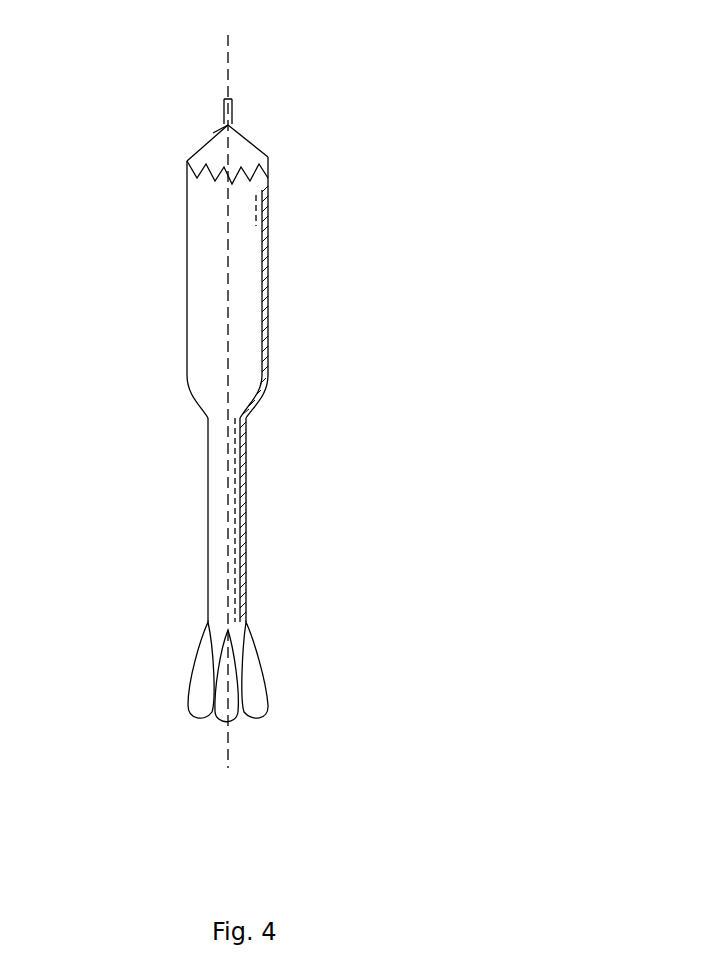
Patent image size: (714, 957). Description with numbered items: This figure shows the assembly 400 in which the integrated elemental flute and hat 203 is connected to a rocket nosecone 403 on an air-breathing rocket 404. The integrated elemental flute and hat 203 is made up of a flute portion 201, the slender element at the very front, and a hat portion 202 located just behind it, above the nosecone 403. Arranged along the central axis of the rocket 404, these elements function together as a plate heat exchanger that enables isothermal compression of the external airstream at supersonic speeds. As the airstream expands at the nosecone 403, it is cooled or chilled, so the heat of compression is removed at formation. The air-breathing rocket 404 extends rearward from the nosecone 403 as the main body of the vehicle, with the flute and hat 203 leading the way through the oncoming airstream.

The flute portion 201 is at (232, 112).
The hat portion 202 is at (244, 139).
The integrated elemental flute and hat 203 is at (212, 136).
The integrated flute and hat connected to a rocket nosecone 400 is at (156, 410).
The rocket nosecone 403 is at (187, 204).
The air-breathing rocket 404 is at (248, 440).